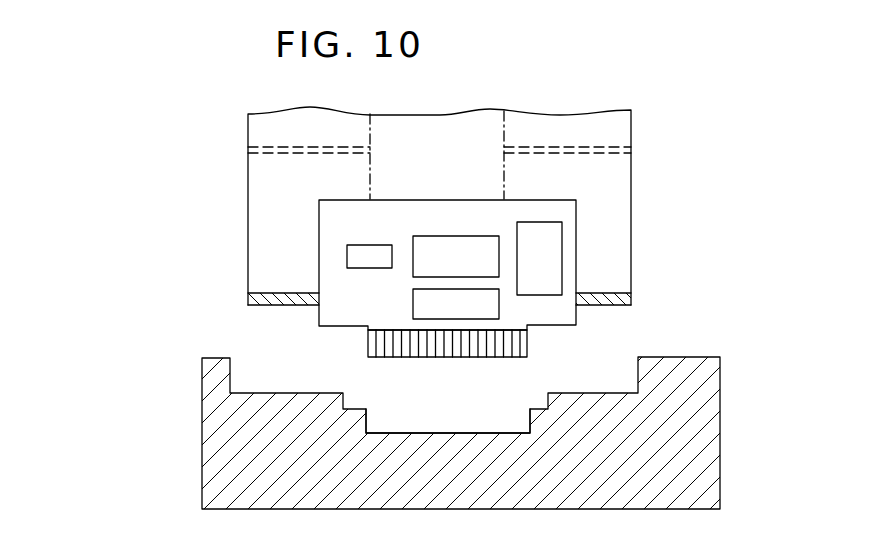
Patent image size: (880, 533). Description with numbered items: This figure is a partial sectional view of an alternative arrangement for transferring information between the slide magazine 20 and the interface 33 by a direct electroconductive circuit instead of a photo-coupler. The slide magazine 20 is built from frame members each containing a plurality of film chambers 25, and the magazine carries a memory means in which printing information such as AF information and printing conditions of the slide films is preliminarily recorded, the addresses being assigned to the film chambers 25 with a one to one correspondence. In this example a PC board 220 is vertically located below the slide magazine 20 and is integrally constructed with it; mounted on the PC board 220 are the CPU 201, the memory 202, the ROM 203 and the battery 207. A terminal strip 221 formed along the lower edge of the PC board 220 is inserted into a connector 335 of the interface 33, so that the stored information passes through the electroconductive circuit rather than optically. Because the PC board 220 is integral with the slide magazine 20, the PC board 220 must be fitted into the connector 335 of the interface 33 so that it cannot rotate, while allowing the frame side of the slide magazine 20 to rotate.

The slide magazine 20 is at (632, 160).
The film chambers 25 is at (578, 98).
The interface 33 is at (202, 455).
The CPU 201 is at (443, 236).
The memory 202 is at (562, 235).
The ROM 203 is at (413, 309).
The battery 207 is at (363, 245).
The PC board 220 is at (321, 323).
The terminal strip 221 is at (457, 352).
The connector 335 is at (429, 421).